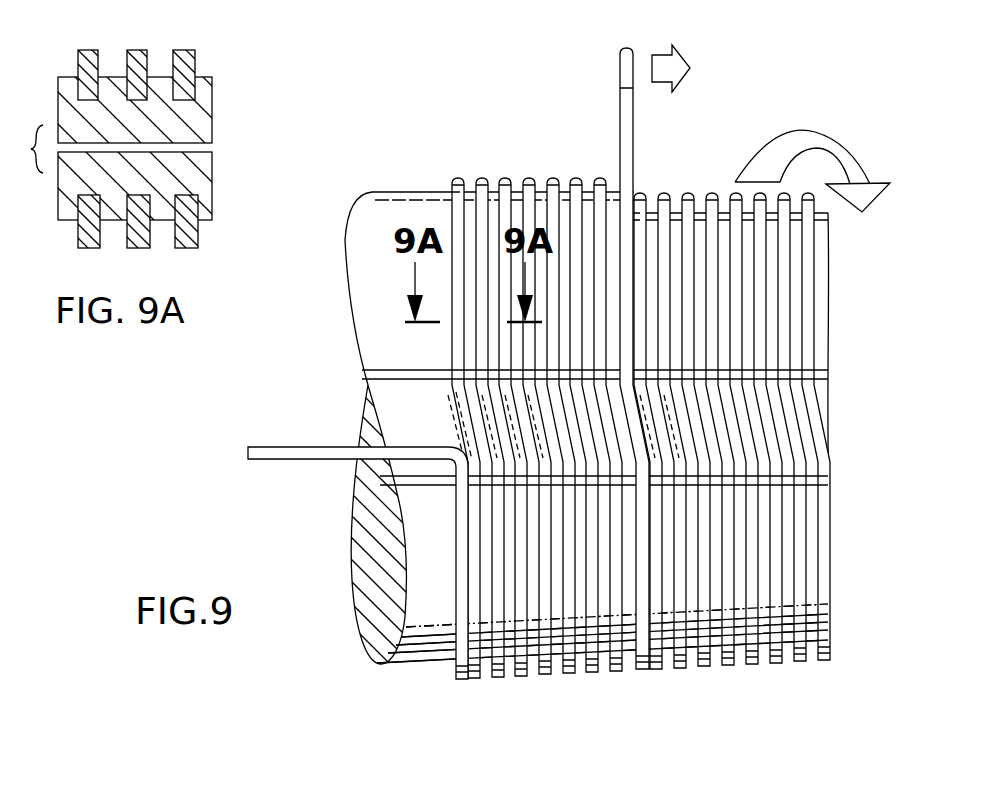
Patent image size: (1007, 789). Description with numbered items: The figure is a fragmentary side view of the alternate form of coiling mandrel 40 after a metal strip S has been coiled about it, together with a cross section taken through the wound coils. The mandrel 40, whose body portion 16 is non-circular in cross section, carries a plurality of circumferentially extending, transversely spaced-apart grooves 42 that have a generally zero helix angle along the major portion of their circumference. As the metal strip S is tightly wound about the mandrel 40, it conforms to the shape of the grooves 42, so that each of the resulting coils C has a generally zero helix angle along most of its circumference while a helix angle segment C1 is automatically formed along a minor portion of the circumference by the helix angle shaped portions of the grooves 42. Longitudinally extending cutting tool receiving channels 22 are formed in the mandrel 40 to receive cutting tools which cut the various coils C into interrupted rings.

In FIG. 9, the body portion 16 is at (834, 283).
In FIG. 9, the cutting tool receiving channels 22 is at (823, 371).
In FIG. 9, the coiling mandrel 40 is at (391, 184).
In FIG. 9A, the coiling mandrel 40 is at (218, 125).
In FIG. 9, the grooves 42 is at (702, 192).
In FIG. 9A, the grooves 42 is at (182, 86).
In FIG. 9A, the coils C is at (131, 50).
In FIG. 9, the helix angle segment C1 is at (760, 430).
In FIG. 9, the metal strip S is at (618, 112).